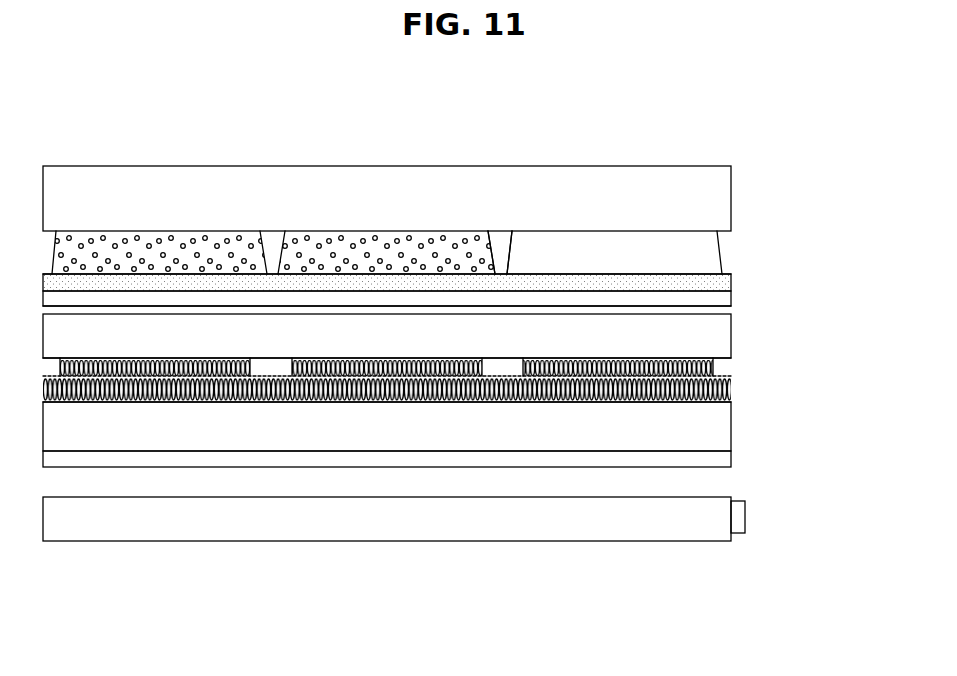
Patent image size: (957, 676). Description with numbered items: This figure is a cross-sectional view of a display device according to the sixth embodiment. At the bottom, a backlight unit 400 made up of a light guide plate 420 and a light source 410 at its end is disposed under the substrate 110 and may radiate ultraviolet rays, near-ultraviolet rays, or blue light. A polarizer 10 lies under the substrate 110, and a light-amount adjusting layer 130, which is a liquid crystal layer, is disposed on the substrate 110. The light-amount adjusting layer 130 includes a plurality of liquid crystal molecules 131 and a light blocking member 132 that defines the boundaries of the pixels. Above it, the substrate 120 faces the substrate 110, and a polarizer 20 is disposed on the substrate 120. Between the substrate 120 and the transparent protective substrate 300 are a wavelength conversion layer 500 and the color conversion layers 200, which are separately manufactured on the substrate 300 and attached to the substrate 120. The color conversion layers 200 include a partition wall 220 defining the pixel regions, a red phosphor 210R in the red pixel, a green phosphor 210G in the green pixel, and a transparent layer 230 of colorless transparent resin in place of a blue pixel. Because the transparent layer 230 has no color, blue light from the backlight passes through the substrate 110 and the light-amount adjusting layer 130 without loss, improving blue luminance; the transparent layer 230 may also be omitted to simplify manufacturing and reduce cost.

The polarizer 10 is at (718, 458).
The polarizer 20 is at (713, 302).
The substrate 110 is at (715, 425).
The substrate 120 is at (713, 338).
The light-amount adjusting layer 130 is at (462, 381).
The liquid crystal molecules 131 is at (728, 392).
The light blocking member 132 is at (715, 365).
The color conversion layers 200 is at (432, 197).
The red phosphor 210R is at (196, 242).
The green phosphor 210G is at (341, 242).
The partition wall 220 is at (495, 270).
The transparent layer 230 is at (604, 255).
The substrate 300 is at (713, 197).
The backlight unit 400 is at (400, 571).
The light source 410 is at (740, 530).
The light guide plate 420 is at (678, 530).
The wavelength conversion layer 500 is at (714, 284).